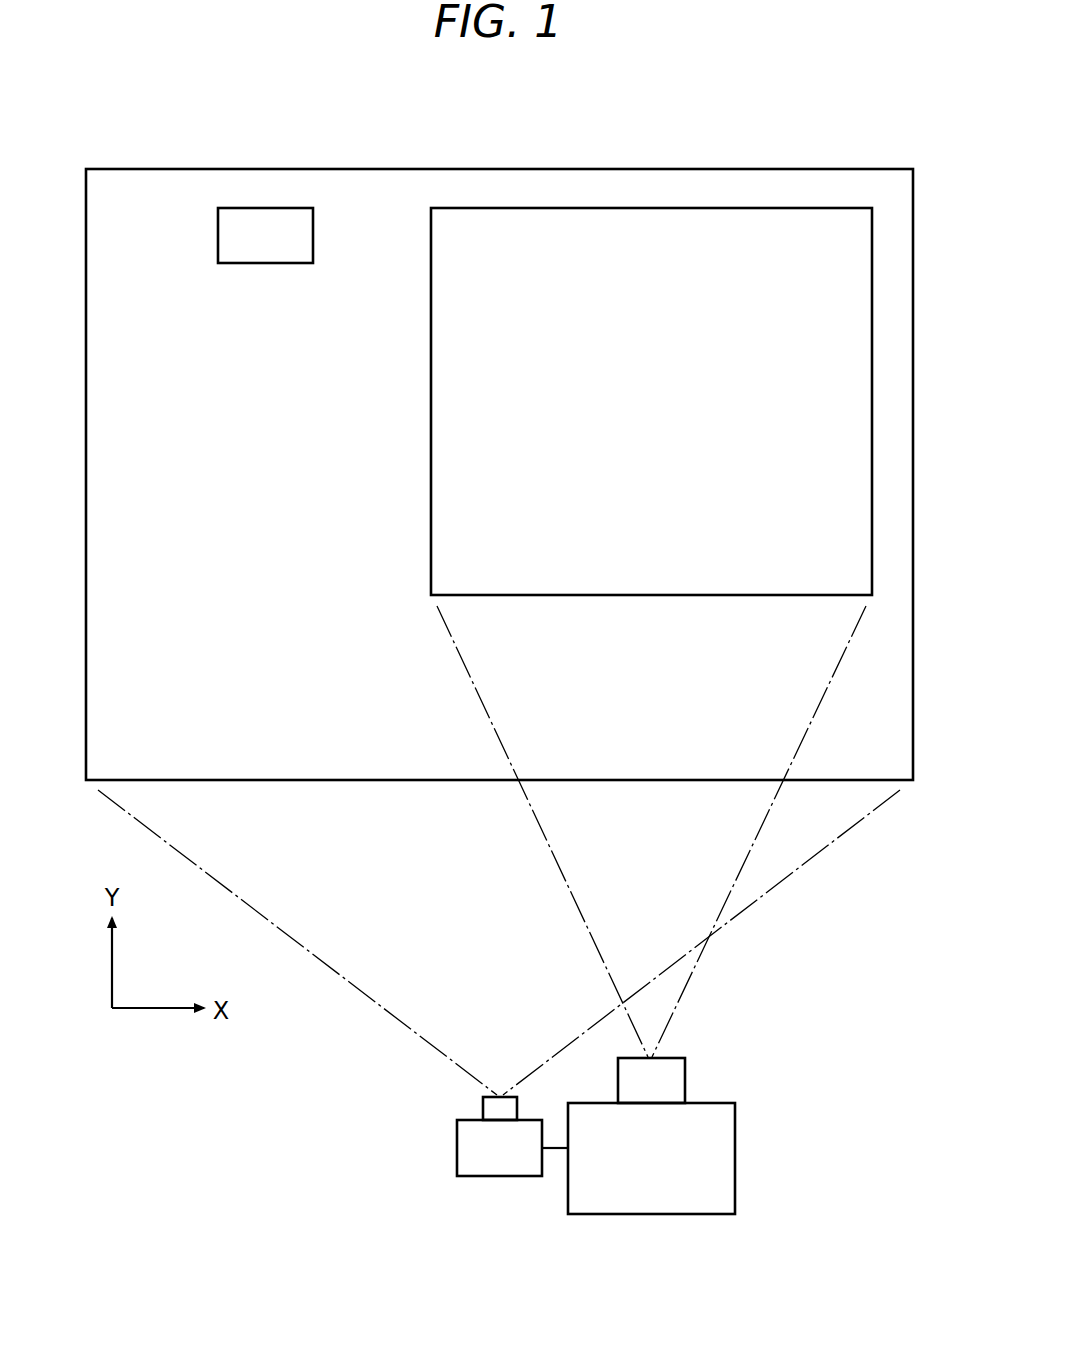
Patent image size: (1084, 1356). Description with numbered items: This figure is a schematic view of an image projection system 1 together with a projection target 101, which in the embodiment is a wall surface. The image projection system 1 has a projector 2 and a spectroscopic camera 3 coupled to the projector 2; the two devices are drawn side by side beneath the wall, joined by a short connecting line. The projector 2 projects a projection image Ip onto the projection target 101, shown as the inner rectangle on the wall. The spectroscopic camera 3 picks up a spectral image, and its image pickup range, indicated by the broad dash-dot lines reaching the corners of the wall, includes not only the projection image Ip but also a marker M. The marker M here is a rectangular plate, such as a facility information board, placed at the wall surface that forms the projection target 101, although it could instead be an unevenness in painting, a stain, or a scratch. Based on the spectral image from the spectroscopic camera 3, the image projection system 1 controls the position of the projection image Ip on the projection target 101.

The projection target 101 is at (587, 168).
The marker M is at (264, 207).
The projection image Ip is at (771, 207).
The image projection system 1 is at (499, 957).
The projector 2 is at (658, 1216).
The spectroscopic camera 3 is at (500, 1178).